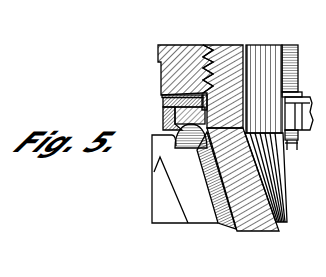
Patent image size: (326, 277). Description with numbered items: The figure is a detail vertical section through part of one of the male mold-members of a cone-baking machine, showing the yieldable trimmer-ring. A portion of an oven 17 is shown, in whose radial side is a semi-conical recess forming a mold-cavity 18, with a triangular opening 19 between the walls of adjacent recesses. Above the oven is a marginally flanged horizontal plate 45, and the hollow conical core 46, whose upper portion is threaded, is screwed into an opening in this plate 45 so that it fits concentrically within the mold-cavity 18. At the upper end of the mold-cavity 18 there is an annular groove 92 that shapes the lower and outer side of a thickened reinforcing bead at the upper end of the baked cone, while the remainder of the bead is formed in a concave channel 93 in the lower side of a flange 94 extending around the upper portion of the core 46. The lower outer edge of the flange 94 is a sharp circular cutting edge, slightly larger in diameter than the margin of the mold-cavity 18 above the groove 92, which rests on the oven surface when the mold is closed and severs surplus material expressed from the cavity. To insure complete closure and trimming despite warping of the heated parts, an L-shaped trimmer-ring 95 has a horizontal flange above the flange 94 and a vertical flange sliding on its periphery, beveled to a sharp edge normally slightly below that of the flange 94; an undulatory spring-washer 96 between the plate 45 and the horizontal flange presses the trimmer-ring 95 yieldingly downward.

The oven 17 is at (196, 215).
The mold-cavity 18 is at (230, 222).
The triangular opening 19 is at (171, 190).
The horizontal plate 45 is at (190, 55).
The core 46 is at (265, 222).
The annular groove 92 is at (193, 148).
The concave channel 93 is at (162, 123).
The flange 94 is at (162, 113).
The trimmer-ring 95 is at (160, 103).
The spring-washer 96 is at (162, 91).